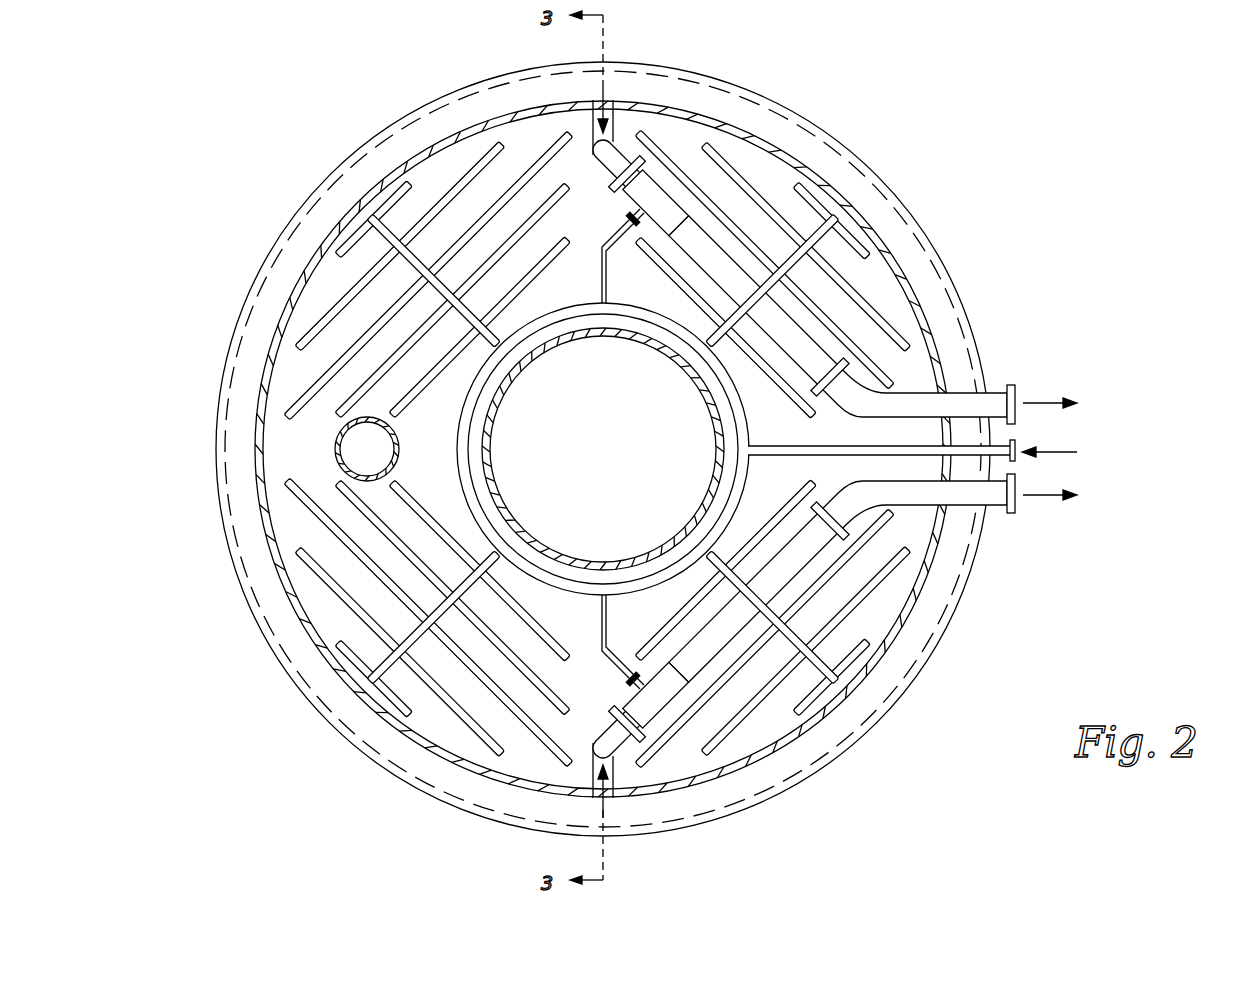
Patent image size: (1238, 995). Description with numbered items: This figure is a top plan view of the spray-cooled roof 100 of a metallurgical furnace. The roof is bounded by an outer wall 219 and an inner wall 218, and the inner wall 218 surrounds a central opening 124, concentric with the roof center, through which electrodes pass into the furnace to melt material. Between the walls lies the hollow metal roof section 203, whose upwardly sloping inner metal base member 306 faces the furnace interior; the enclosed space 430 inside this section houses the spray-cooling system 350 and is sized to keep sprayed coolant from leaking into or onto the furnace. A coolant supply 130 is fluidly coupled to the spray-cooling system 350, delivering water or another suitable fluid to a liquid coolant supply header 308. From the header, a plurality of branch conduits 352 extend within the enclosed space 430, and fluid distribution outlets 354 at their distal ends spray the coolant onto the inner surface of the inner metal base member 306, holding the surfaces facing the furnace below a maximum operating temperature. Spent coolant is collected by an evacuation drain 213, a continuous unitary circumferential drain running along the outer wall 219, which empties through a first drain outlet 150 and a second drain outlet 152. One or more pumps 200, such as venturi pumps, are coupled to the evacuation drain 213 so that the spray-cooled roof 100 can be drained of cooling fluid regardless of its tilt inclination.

The spray-cooled roof 100 is at (563, 447).
The central opening 124 is at (650, 362).
The coolant supply 130 is at (1013, 443).
The first drain outlet 150 is at (1013, 512).
The second drain outlet 152 is at (1013, 386).
The pumps 200 is at (624, 206).
The hollow metal roof section 203 is at (883, 607).
The evacuation drain 213 is at (215, 441).
The inner wall 218 is at (565, 568).
The outer wall 219 is at (263, 532).
The inner metal base member 306 is at (285, 378).
The liquid coolant supply header 308 is at (457, 427).
The spray-cooling system 350 is at (634, 438).
The branch conduits 352 is at (358, 230).
The fluid distribution outlets 354 is at (325, 320).
The enclosed space 430 is at (798, 433).